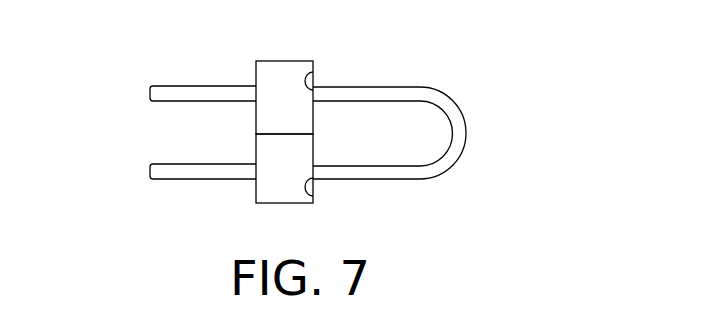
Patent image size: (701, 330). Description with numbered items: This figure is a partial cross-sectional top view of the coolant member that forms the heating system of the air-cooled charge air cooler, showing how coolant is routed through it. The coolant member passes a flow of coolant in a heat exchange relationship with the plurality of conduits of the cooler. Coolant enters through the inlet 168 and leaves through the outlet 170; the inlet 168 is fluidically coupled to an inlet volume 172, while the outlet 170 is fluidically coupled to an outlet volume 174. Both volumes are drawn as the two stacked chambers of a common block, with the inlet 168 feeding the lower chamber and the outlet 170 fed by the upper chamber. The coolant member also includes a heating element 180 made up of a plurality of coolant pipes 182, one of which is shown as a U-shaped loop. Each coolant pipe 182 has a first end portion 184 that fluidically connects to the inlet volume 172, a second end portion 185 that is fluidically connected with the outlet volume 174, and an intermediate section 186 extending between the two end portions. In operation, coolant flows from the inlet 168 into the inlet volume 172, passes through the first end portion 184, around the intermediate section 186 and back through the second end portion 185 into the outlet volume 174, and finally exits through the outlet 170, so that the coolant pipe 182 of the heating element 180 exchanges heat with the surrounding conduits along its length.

The outlet 170 is at (150, 93).
The inlet 168 is at (150, 168).
The outlet volume 174 is at (277, 95).
The inlet volume 172 is at (277, 172).
The second end portion 185 is at (313, 72).
The first end portion 184 is at (313, 196).
The intermediate section 186 is at (458, 132).
The heating element 180 is at (500, 174).
The coolant pipe 182 is at (437, 183).